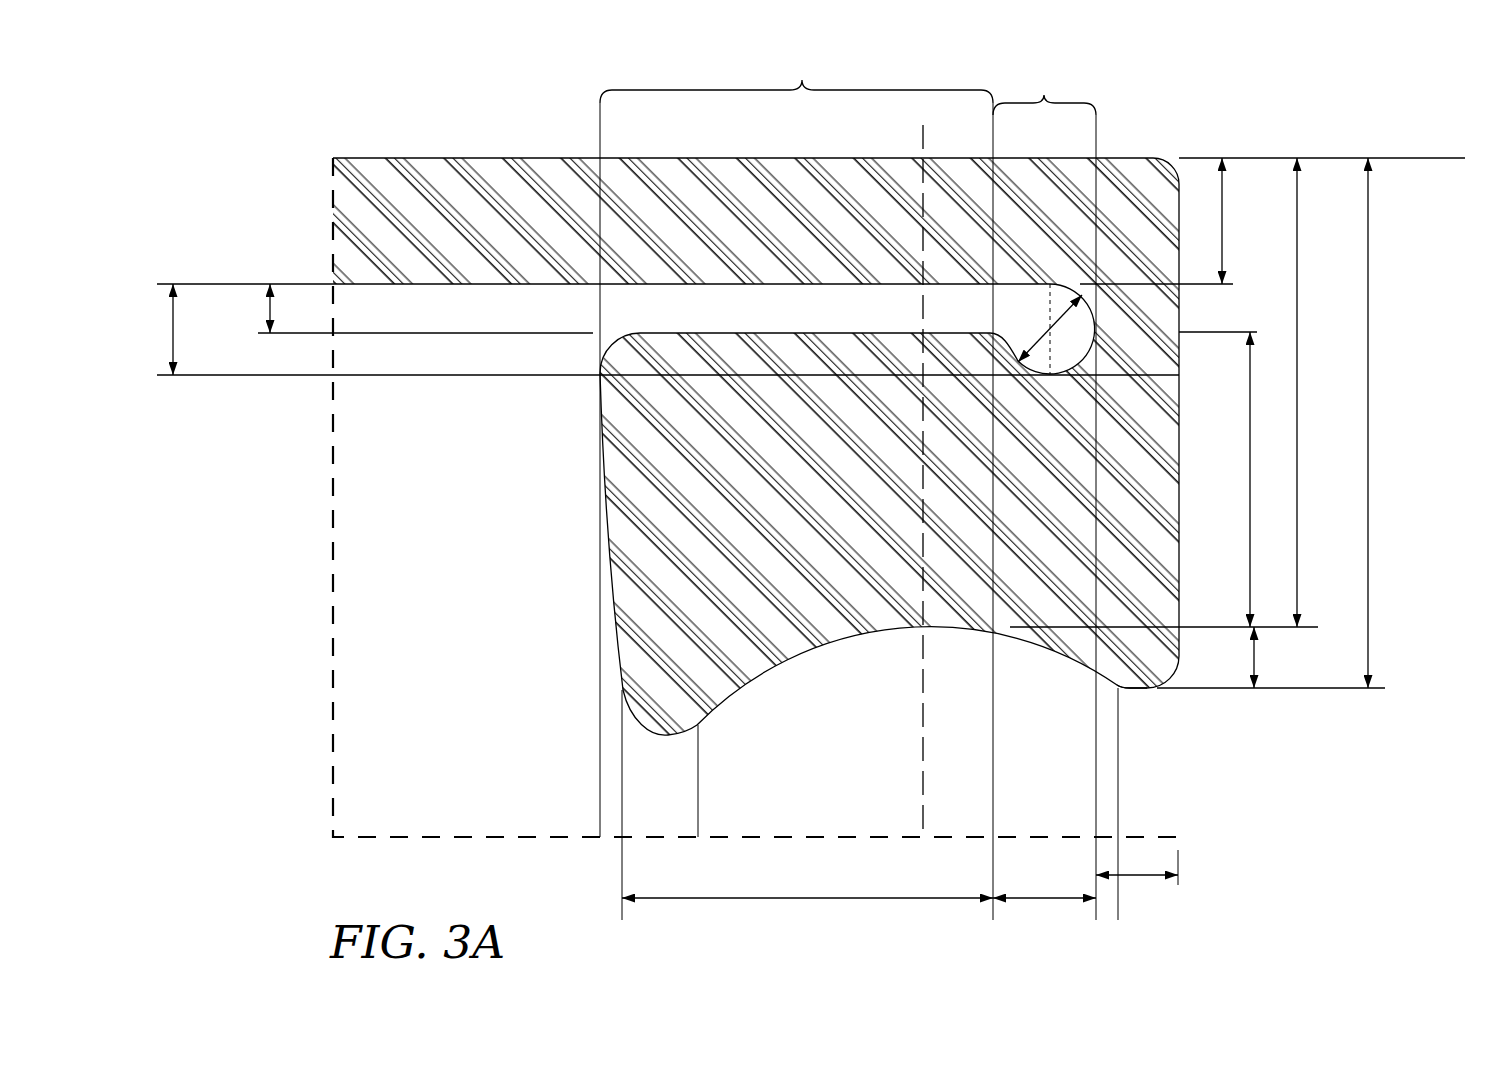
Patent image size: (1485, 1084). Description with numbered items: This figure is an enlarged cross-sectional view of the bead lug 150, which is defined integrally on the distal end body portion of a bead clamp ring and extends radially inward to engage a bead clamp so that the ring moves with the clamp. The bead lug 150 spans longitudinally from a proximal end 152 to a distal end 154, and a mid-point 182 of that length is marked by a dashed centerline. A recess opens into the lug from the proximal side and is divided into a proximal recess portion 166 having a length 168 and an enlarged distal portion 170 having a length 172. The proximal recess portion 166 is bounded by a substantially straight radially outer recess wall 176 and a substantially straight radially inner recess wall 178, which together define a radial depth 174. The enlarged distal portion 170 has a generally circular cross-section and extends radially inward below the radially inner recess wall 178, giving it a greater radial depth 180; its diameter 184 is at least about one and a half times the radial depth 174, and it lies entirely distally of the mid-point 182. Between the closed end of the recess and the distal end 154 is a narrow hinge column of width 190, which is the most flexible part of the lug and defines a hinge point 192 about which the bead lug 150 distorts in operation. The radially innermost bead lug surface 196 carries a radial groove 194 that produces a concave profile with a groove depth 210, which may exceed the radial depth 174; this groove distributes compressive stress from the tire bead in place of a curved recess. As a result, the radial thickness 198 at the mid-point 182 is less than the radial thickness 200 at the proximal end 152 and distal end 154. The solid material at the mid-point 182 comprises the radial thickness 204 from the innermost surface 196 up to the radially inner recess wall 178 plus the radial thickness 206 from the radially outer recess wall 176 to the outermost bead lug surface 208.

The bead lug 150 is at (497, 690).
The proximal end 152 is at (603, 462).
The distal end 154 is at (1180, 600).
The proximal recess portion 166 is at (802, 80).
The length 168 is at (790, 897).
The enlarged distal portion 170 is at (1044, 95).
The length 172 is at (1075, 897).
The radial depth 174 is at (268, 310).
The radially outer recess wall 176 is at (668, 284).
The radially inner recess wall 178 is at (693, 333).
The radial depth 180 is at (172, 330).
The mid-point 182 is at (923, 735).
The diameter 184 is at (1030, 347).
The width 190 is at (1135, 876).
The hinge point 192 is at (1097, 328).
The radial groove 194 is at (762, 678).
The radially innermost bead lug surface 196 is at (1118, 688).
The radial thickness 198 is at (1297, 353).
The radial thickness 200 is at (1368, 365).
The radial thickness 204 is at (1250, 480).
The radial thickness 206 is at (1222, 236).
The outermost bead lug surface 208 is at (1100, 158).
The groove depth 210 is at (1254, 655).